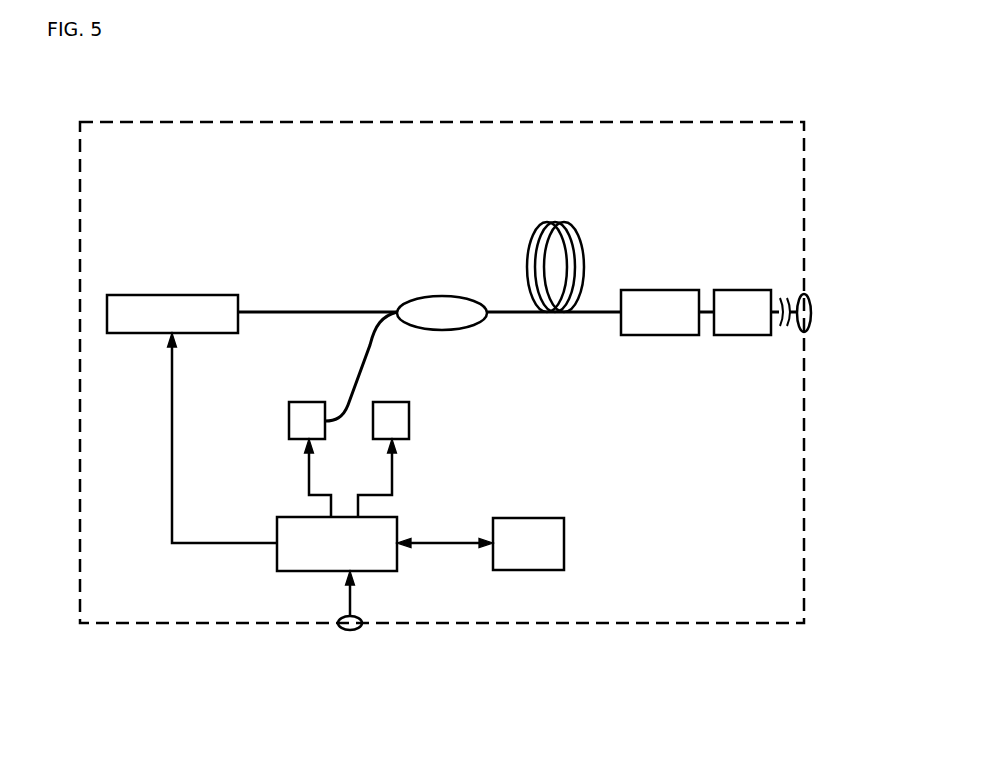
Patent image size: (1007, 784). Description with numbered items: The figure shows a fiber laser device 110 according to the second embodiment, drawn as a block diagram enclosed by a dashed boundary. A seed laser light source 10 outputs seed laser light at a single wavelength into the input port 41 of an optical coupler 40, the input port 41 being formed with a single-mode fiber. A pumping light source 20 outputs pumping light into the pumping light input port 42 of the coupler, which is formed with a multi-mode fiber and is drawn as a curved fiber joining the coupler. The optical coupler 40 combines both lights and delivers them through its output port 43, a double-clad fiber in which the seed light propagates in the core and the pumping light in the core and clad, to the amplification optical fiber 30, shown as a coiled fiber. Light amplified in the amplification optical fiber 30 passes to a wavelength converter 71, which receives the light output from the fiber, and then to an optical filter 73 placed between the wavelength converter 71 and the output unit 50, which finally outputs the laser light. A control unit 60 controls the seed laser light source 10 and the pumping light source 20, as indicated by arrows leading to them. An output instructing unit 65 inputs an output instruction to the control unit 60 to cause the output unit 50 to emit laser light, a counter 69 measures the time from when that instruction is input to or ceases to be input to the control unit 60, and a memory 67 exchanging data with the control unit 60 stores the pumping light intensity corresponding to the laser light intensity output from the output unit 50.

The fiber laser device 110 is at (496, 122).
The seed laser light source 10 is at (175, 300).
The input port 41 is at (332, 312).
The optical coupler 40 is at (430, 302).
The output port 43 is at (505, 312).
The amplification optical fiber 30 is at (586, 310).
The wavelength converter 71 is at (665, 328).
The optical filter 73 is at (738, 328).
The output unit 50 is at (812, 300).
The pumping light input port 42 is at (362, 377).
The pumping light source 20 is at (303, 420).
The counter 69 is at (388, 420).
The control unit 60 is at (312, 522).
The memory 67 is at (553, 545).
The output instructing unit 65 is at (357, 631).